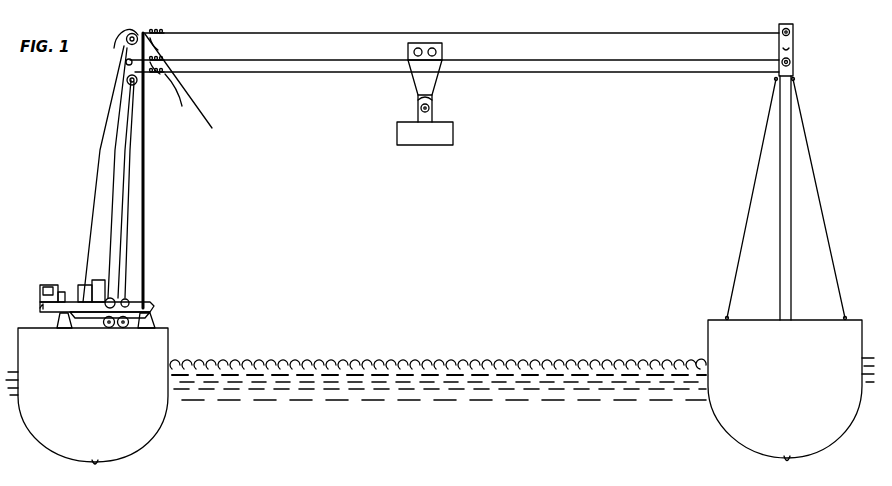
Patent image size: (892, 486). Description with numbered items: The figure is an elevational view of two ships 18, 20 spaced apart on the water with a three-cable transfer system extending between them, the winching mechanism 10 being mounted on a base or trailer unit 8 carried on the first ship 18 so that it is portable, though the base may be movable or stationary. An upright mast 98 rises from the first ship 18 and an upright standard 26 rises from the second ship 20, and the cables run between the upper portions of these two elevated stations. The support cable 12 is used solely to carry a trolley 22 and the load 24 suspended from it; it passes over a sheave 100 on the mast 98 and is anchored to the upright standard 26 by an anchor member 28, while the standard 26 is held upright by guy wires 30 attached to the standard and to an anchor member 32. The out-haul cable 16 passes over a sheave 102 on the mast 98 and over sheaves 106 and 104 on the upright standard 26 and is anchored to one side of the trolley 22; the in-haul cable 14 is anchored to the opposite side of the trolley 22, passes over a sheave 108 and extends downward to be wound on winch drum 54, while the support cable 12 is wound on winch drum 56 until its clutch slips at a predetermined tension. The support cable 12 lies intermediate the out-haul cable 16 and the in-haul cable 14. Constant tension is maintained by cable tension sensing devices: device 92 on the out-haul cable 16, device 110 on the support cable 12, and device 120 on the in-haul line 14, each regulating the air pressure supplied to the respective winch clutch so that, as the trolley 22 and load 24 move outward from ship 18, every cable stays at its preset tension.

The base or trailer unit 8 is at (155, 301).
The winching mechanism 10 is at (99, 270).
The support cable 12 is at (560, 61).
The in-haul cable 14 is at (296, 73).
The out-haul cable 16 is at (607, 33).
The ship 18 is at (164, 350).
The ship 20 is at (710, 338).
The trolley 22 is at (432, 78).
The load 24 is at (453, 138).
The upright standard 26 is at (782, 200).
The anchor member 28 is at (780, 42).
The guy wires 30 is at (821, 203).
The anchor member 32 is at (727, 314).
The winch drum 54 is at (115, 292).
The winch drum 56 is at (128, 297).
The cable tension sensing device 92 is at (185, 90).
The mast 98 is at (146, 208).
The sheave 100 is at (126, 63).
The sheave 102 is at (125, 42).
The sheave 104 is at (791, 40).
The sheave 106 is at (792, 64).
The sheave 108 is at (127, 84).
The cable tension sensing device 110 is at (182, 100).
The cable tension sensing device 120 is at (165, 76).